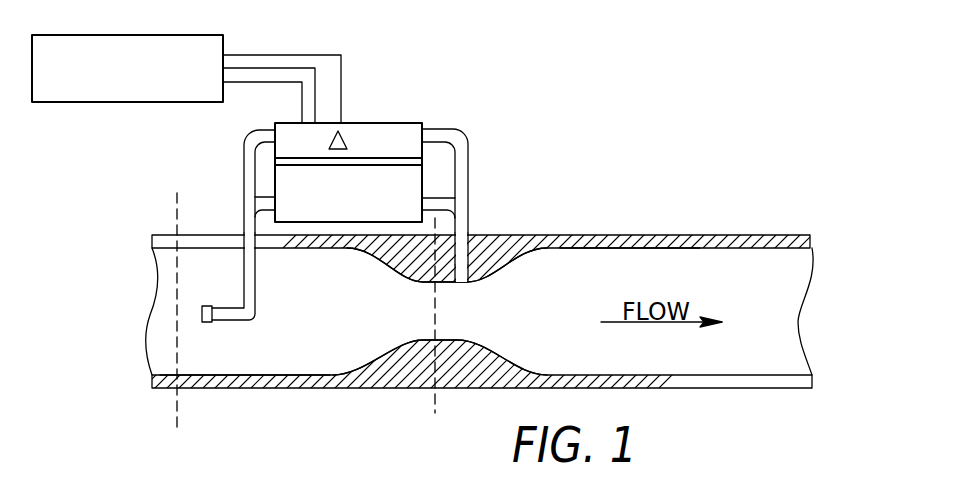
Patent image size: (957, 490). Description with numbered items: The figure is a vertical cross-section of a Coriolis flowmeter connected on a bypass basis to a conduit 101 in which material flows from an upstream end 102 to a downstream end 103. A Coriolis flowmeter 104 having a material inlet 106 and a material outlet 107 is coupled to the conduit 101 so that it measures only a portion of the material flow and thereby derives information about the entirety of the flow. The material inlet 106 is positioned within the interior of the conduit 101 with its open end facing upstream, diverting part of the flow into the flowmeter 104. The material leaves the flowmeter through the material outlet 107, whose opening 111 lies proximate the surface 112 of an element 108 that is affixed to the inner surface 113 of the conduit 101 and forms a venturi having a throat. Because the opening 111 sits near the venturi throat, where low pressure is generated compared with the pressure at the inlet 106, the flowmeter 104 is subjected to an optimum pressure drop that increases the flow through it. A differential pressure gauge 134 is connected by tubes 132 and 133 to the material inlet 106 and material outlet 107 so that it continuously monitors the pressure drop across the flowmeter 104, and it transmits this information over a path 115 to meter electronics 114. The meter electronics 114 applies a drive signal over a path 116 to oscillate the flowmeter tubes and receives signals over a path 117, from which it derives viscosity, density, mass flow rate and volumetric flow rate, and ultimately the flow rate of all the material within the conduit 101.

The conduit 101 is at (710, 235).
The upstream end 102 is at (147, 333).
The downstream end 103 is at (800, 333).
The Coriolis flowmeter 104 is at (423, 172).
The material inlet 106 is at (242, 308).
The material outlet 107 is at (423, 193).
The element 108 is at (382, 360).
The opening 111 is at (465, 281).
The surface 112 is at (470, 278).
The inner surface 113 is at (690, 248).
The meter electronics 114 is at (132, 102).
The path 115 is at (340, 98).
The path 116 is at (253, 68).
The path 117 is at (272, 82).
The tube 132 is at (247, 157).
The tube 133 is at (466, 153).
The differential pressure gauge 134 is at (413, 119).